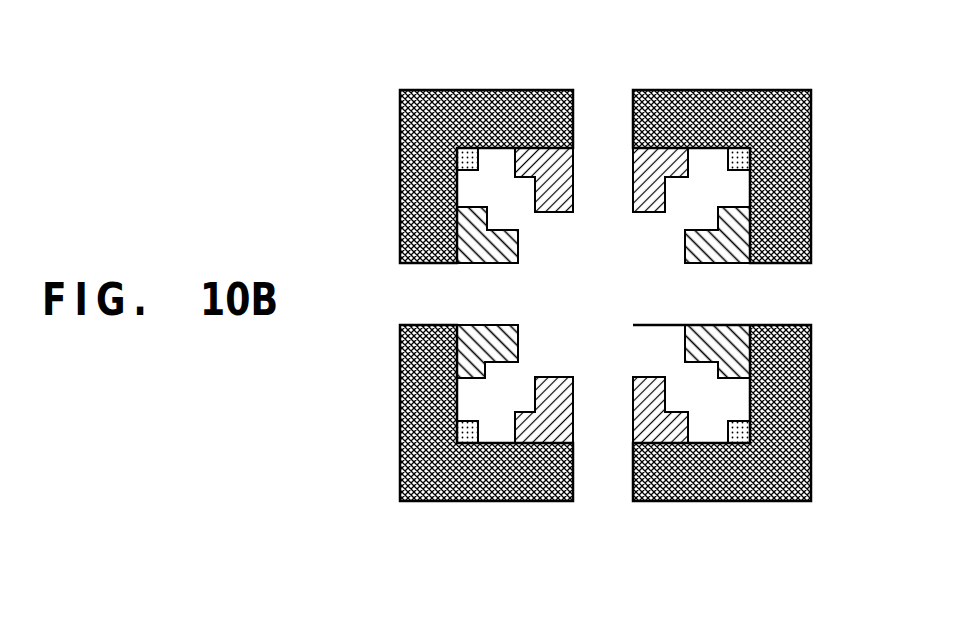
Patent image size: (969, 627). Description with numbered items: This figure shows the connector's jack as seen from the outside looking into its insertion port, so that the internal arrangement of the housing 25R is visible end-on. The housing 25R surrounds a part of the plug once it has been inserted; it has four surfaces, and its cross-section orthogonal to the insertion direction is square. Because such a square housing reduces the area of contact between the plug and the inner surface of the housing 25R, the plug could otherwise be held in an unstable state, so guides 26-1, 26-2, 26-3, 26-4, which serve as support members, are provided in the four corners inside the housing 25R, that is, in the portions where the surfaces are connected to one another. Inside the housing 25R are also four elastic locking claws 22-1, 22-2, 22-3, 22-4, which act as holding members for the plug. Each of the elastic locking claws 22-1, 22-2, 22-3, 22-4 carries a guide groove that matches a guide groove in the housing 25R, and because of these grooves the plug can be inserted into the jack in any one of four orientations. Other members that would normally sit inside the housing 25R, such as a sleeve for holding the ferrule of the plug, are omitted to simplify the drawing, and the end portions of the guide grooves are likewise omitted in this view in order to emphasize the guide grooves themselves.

The housing 25R is at (793, 92).
The guide 26-1 is at (470, 130).
The guide 26-2 is at (470, 475).
The guide 26-3 is at (747, 472).
The guide 26-4 is at (727, 125).
The elastic locking claw 22-1 is at (555, 212).
The elastic locking claw 22-2 is at (472, 263).
The elastic locking claw 22-3 is at (545, 377).
The elastic locking claw 22-4 is at (737, 325).